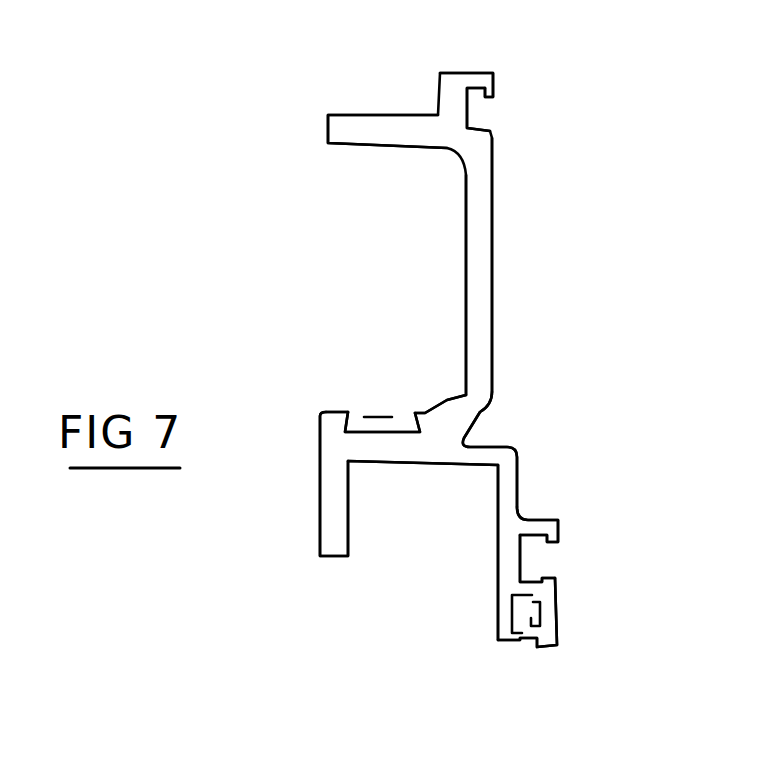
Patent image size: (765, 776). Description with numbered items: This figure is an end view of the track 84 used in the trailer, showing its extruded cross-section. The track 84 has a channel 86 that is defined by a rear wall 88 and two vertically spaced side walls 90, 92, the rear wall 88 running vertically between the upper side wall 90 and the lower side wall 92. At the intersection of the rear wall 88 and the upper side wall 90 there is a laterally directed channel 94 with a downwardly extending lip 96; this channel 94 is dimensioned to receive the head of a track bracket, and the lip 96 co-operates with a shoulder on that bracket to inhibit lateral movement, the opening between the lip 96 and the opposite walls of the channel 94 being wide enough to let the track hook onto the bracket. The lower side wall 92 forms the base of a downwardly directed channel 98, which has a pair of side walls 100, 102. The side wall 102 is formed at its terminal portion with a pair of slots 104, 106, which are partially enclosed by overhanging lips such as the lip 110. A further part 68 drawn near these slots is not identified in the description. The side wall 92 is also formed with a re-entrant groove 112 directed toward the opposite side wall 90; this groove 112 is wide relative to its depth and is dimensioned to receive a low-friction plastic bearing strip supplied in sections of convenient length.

The track 84 is at (284, 95).
The side wall 90 is at (361, 128).
The downwardly extending lip 96 is at (495, 93).
The laterally directed channel 94 is at (483, 112).
The rear wall 88 is at (482, 246).
The channel 86 is at (385, 300).
The re-entrant groove 112 is at (378, 417).
The side wall 92 is at (377, 450).
The side wall 100 is at (327, 515).
The side wall 102 is at (518, 481).
The downwardly directed channel 98 is at (398, 540).
The lower hook 68 is at (558, 542).
The slot 104 is at (542, 557).
The overhanging lip 110 is at (550, 648).
The slot 106 is at (527, 621).